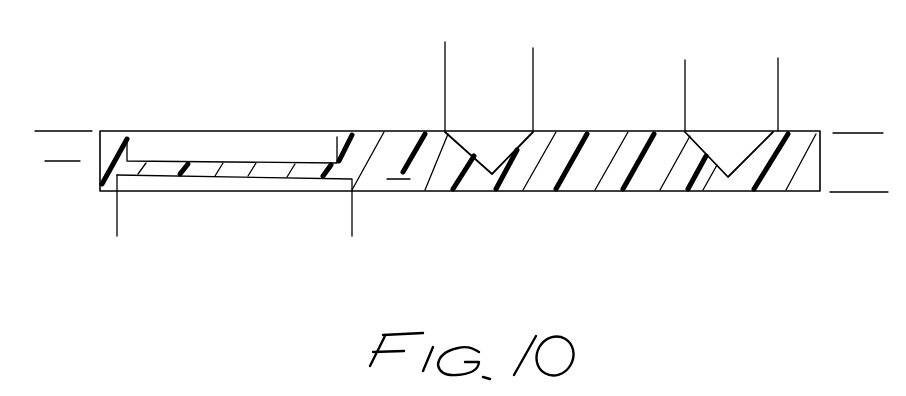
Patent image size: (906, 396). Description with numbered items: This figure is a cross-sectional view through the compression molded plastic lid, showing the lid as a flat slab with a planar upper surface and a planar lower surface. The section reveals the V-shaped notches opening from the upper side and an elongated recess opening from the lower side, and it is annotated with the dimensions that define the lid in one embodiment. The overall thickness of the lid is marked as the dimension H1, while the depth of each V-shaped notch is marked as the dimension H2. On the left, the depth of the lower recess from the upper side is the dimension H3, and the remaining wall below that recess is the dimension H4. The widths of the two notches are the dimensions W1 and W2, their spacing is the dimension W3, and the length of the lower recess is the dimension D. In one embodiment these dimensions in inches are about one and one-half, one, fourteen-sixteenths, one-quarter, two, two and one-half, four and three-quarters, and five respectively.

The dimension H1 is at (857, 92).
The dimension H2 is at (492, 95).
The dimension H3 is at (66, 95).
The dimension H4 is at (398, 117).
The dimension W1 is at (817, 73).
The dimension W2 is at (400, 70).
The dimension W3 is at (685, 106).
The dimension D is at (352, 232).